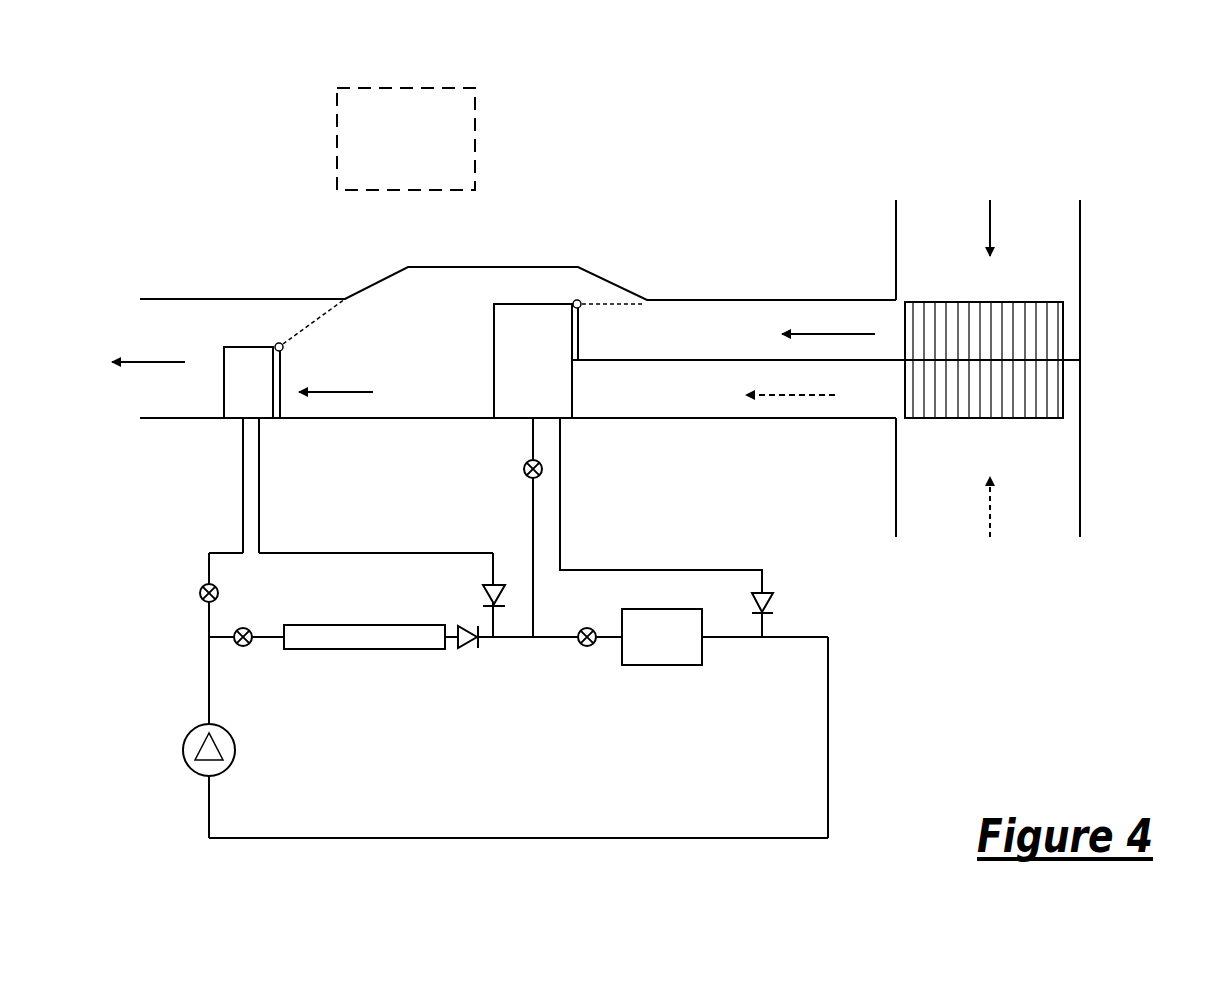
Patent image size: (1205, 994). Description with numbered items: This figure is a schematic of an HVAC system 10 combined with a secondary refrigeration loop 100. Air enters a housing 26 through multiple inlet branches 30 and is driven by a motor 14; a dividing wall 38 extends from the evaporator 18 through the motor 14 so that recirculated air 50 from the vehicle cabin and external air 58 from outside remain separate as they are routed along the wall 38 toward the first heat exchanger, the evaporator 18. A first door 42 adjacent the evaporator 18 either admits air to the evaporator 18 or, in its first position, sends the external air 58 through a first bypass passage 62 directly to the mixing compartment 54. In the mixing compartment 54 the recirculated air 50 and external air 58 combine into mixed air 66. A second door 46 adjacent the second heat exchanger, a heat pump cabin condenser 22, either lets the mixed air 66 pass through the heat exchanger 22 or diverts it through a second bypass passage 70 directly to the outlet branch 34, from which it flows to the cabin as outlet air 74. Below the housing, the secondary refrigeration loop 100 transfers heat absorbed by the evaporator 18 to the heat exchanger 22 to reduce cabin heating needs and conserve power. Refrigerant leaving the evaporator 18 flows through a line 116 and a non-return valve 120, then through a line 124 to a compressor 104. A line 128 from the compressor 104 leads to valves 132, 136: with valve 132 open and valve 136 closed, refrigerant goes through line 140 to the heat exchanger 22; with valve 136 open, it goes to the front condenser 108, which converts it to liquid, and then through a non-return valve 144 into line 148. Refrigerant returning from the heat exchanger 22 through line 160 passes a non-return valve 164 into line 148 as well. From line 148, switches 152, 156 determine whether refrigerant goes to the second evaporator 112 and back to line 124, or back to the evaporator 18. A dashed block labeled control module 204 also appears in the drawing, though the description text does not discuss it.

The HVAC system 10 is at (868, 107).
The motor 14 is at (1063, 335).
The evaporator 18 is at (505, 418).
The heat pump cabin condenser 22 is at (232, 418).
The housing 26 is at (1082, 277).
The inlet branches 30 is at (1020, 273).
The outlet branch 34 is at (205, 398).
The dividing wall 38 is at (708, 362).
The first door 42 is at (577, 338).
The second door 46 is at (279, 398).
The recirculated air 50 is at (990, 522).
The mixing compartment 54 is at (445, 370).
The external air 58 is at (990, 220).
The first bypass passage 62 is at (598, 292).
The mixed air 66 is at (353, 392).
The second bypass passage 70 is at (302, 317).
The outlet air 74 is at (163, 362).
The secondary refrigeration loop 100 is at (235, 883).
The compressor 104 is at (193, 772).
The front condenser 108 is at (342, 633).
The second evaporator 112 is at (675, 645).
The line 116 is at (645, 567).
The valve 120 is at (773, 605).
The line 124 is at (828, 682).
The line 128 is at (203, 698).
The valve 132 is at (198, 592).
The valve 136 is at (243, 646).
The line 140 is at (209, 558).
The valve 144 is at (467, 650).
The line 148 is at (519, 637).
The switch 152 is at (587, 646).
The switch 156 is at (528, 478).
The line 160 is at (367, 553).
The valve 164 is at (483, 590).
The control module 204 is at (337, 88).